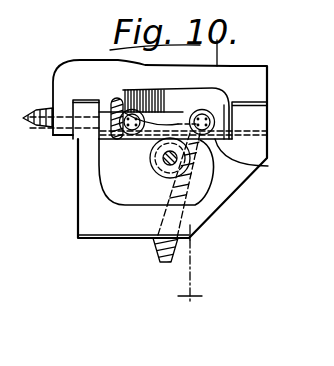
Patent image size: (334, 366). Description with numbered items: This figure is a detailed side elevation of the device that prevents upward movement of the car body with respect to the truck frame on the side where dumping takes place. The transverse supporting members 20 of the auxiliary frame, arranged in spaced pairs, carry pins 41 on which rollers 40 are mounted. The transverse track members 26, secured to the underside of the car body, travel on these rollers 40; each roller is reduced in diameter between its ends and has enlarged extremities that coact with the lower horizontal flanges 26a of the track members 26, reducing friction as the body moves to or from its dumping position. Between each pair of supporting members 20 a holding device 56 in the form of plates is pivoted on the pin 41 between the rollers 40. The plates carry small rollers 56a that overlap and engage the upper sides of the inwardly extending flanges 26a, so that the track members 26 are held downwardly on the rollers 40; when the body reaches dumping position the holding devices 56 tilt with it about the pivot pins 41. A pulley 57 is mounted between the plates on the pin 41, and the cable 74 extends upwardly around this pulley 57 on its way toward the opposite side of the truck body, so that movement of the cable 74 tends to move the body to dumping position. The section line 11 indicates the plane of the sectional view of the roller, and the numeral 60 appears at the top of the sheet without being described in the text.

The section line 11- 11 is at (229, 57).
The transverse supporting members 20 is at (78, 168).
The transverse track members 26 is at (268, 73).
The lower horizontal flanges 26a is at (265, 168).
The rollers 40 is at (151, 163).
The pins 41 is at (168, 166).
The holding devices 56 is at (185, 110).
The small rollers 56a is at (322, 115).
The pulley 57 is at (150, 154).
The lever 60 is at (84, 8).
The cable 74 is at (170, 250).